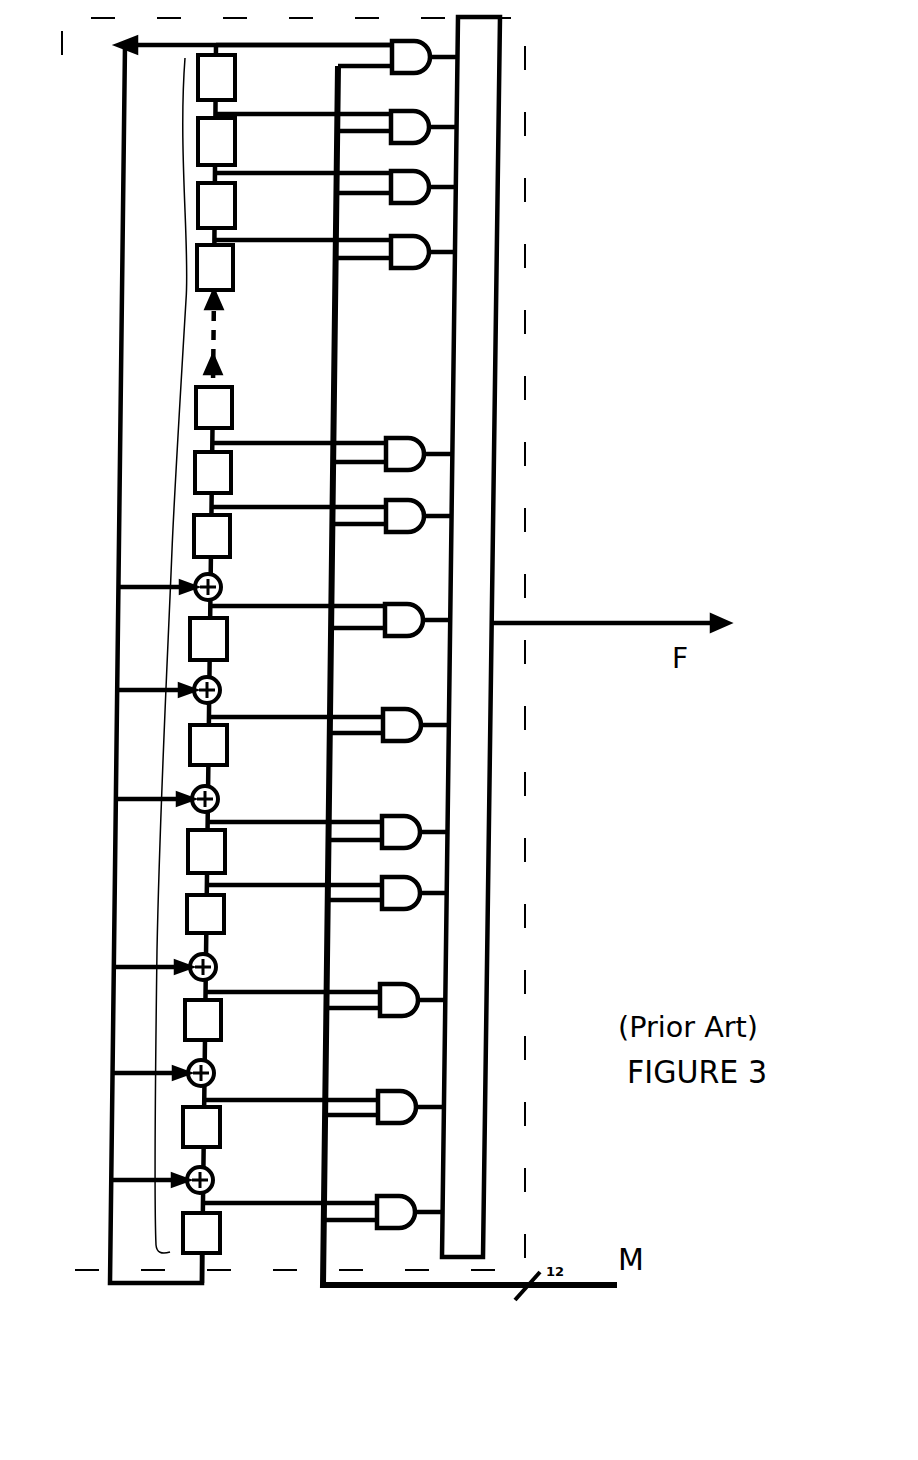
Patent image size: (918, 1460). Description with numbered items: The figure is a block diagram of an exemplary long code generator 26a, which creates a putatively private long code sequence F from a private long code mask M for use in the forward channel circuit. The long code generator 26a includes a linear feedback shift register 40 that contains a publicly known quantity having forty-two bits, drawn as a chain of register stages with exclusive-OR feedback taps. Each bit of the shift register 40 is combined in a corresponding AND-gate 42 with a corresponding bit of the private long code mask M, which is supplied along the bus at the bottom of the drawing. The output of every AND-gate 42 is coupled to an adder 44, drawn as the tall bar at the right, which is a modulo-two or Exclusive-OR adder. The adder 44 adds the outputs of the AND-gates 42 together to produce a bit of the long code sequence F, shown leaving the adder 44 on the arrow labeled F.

The long code generator 26a is at (525, 512).
The linear feedback shift register 40 is at (172, 548).
The AND-gate 42 is at (405, 73).
The adder 44 is at (483, 1138).